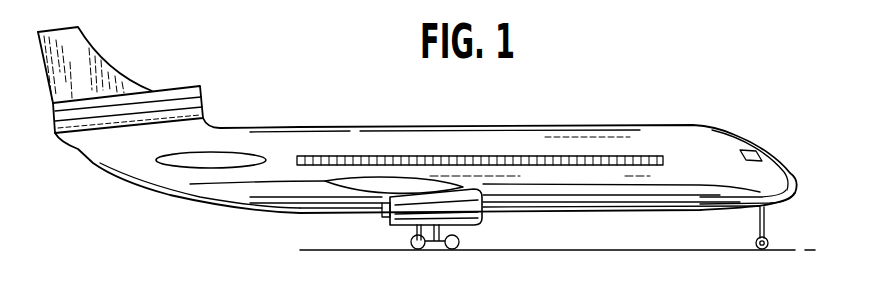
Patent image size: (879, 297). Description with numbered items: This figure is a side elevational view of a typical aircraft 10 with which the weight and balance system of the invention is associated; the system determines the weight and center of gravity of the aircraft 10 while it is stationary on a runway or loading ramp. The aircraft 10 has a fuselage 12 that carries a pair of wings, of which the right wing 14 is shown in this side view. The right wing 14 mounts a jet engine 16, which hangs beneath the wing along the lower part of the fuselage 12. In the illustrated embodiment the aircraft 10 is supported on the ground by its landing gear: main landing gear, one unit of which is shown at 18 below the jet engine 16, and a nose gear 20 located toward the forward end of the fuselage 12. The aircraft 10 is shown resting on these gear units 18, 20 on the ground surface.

The aircraft 10 is at (695, 127).
The fuselage 12 is at (568, 210).
The right wing 14 is at (377, 190).
The jet engine 16 is at (473, 220).
The main landing gear 18 is at (433, 252).
The nose gear 20 is at (766, 223).